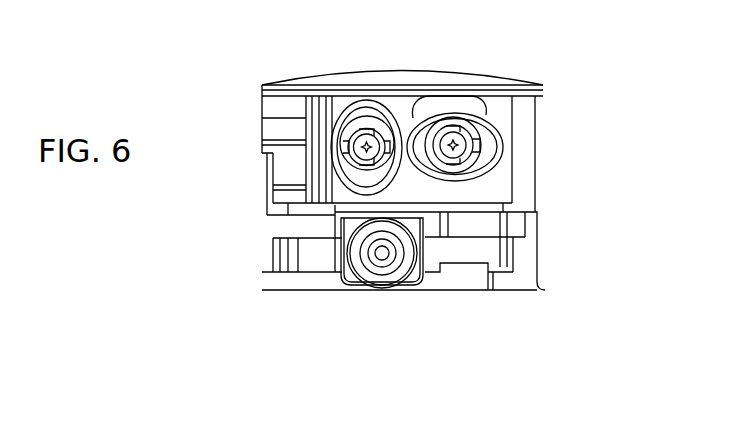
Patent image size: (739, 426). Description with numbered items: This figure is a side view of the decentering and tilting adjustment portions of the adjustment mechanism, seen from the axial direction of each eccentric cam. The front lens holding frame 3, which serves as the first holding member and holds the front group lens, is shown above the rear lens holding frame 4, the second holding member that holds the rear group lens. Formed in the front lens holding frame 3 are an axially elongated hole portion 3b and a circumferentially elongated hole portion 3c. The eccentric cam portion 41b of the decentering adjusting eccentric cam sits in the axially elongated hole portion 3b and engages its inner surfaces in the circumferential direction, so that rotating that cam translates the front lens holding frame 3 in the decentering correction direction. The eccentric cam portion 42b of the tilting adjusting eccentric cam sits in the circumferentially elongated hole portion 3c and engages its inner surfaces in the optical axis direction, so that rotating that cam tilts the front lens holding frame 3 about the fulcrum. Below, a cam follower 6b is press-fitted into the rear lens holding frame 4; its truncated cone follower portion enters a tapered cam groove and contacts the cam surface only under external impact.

The front lens holding frame 3 is at (503, 111).
The axially elongated hole portion 3b is at (348, 110).
The circumferentially elongated hole portion 3c is at (417, 108).
The eccentric cam portion 41b is at (378, 112).
The eccentric cam portion 42b is at (487, 115).
The rear lens holding frame 4 is at (527, 265).
The cam follower 6b is at (383, 267).